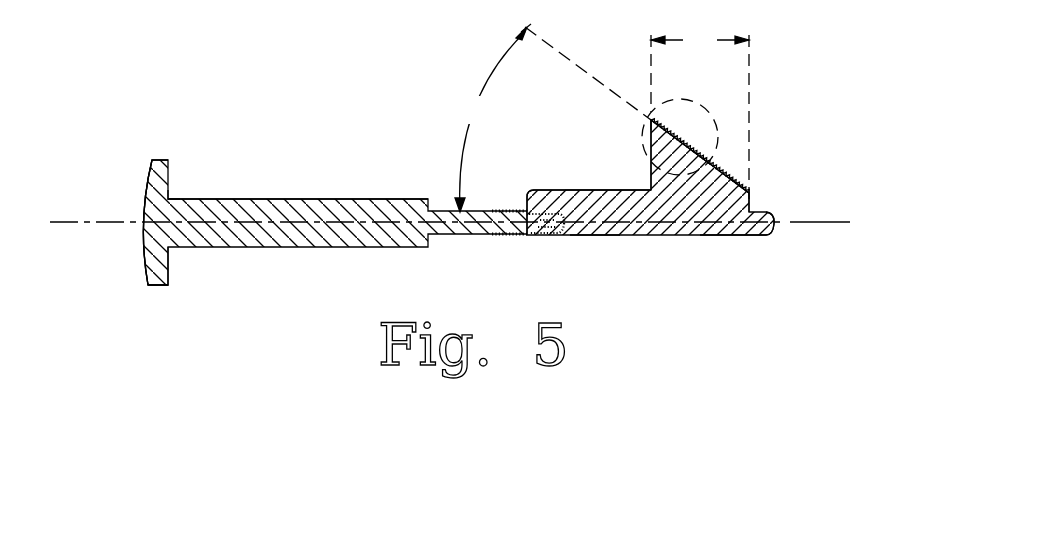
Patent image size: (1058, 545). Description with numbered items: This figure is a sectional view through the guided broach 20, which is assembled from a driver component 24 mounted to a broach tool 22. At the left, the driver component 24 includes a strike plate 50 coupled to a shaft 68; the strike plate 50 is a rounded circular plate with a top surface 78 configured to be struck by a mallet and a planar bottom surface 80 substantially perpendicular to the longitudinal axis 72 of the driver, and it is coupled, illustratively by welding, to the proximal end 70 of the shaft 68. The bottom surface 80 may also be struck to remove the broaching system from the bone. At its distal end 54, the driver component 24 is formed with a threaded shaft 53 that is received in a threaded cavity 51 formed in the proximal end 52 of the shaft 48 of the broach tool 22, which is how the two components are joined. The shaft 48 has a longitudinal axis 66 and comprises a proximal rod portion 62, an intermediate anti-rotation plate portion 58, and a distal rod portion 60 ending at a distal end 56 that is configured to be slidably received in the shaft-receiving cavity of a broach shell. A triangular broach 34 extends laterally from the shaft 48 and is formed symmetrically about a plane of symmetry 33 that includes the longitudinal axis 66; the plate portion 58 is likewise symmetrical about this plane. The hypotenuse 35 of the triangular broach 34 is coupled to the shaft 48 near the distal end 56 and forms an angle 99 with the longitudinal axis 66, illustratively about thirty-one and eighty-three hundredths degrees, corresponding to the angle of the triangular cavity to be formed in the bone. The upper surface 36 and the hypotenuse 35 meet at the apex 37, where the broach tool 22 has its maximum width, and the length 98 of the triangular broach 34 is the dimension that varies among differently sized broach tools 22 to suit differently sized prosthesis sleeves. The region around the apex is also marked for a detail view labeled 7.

The guided broach 20 is at (306, 106).
The longitudinal axis 72 is at (92, 221).
The driver component 24 is at (250, 248).
The strike plate 50 is at (157, 160).
The proximal end 70 is at (177, 199).
The shaft 68 is at (345, 199).
The top surface 78 is at (146, 264).
The bottom surface 80 is at (169, 283).
The angle 99 is at (553, 118).
The proximal end 52 is at (527, 236).
The broach tool 22 is at (640, 236).
The proximal rod portion 62 is at (548, 236).
The shaft 48 is at (592, 236).
The distal end 54 is at (527, 214).
The threaded shaft 53 is at (540, 213).
The threaded cavity 51 is at (546, 216).
The anti-rotation plate portion 58 is at (605, 190).
The plane of symmetry 33 is at (781, 87).
The upper surface 36 is at (648, 122).
The detail region of FIG. 7 is at (643, 138).
The apex 37 is at (681, 139).
The triangular broach 34 is at (700, 156).
The hypotenuse 35 is at (735, 182).
The length 98 is at (700, 114).
The distal rod portion 60 is at (752, 236).
The distal end 56 is at (777, 228).
The longitudinal axis 66 is at (826, 222).